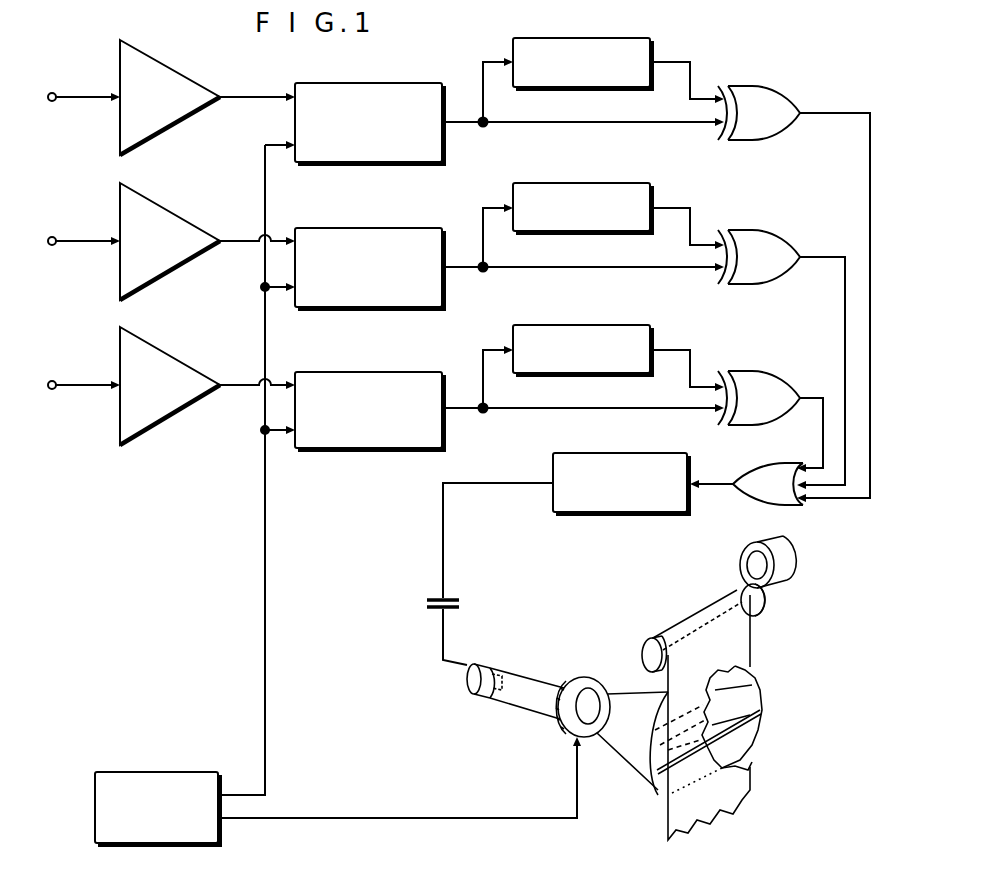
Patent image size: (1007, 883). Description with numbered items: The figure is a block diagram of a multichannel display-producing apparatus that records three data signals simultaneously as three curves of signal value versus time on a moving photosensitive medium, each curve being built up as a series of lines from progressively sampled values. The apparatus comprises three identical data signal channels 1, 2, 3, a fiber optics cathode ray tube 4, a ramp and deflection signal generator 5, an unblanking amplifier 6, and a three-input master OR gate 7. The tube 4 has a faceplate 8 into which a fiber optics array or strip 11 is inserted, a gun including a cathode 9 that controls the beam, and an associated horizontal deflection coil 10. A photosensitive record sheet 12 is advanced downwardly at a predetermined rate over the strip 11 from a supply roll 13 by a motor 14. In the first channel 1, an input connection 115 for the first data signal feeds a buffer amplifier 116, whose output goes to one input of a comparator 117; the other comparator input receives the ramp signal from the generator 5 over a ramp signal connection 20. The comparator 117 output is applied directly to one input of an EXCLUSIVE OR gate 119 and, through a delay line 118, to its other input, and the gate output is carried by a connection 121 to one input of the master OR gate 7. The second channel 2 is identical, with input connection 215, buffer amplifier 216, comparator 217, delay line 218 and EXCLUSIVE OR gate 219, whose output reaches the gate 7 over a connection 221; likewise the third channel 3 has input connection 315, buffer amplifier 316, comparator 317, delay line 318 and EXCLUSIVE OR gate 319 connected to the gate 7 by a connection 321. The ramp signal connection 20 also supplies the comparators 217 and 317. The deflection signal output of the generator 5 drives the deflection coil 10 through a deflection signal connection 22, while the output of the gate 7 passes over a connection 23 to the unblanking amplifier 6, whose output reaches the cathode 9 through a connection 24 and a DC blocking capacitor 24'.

The data signal channel 1 is at (92, 144).
The data signal channel 2 is at (92, 284).
The data signal channel 3 is at (92, 424).
The fiber optics cathode ray tube 4 is at (565, 649).
The ramp and deflection signal generator 5 is at (156, 772).
The unblanking amplifier 6 is at (620, 453).
The master OR gate 7 is at (768, 464).
The faceplate 8 is at (748, 698).
The cathode 9 is at (487, 697).
The horizontal deflection coil 10 is at (558, 723).
The fiber optics array or strip 11 is at (742, 723).
The photosensitive record sheet 12 is at (675, 812).
The supply roll 13 is at (645, 652).
The motor 14 is at (785, 580).
The ramp signal connection 20 is at (265, 566).
The deflection signal connection 22 is at (394, 818).
The connection 23 is at (716, 484).
The connection 24 is at (474, 574).
The DC blocking capacitor 24' is at (399, 618).
The input connection 115 is at (52, 93).
The buffer amplifier 116 is at (170, 64).
The comparator 117 is at (364, 83).
The delay line 118 is at (583, 38).
The EXCLUSIVE OR gate 119 is at (760, 87).
The connection 121 is at (828, 113).
The input connection 215 is at (52, 237).
The buffer amplifier 216 is at (170, 211).
The comparator 217 is at (364, 228).
The delay line 218 is at (583, 183).
The EXCLUSIVE OR gate 219 is at (760, 229).
The connection 221 is at (820, 254).
The input connection 315 is at (52, 381).
The buffer amplifier 316 is at (170, 356).
The comparator 317 is at (364, 372).
The delay line 318 is at (583, 325).
The EXCLUSIVE OR gate 319 is at (760, 371).
The connection 321 is at (812, 398).